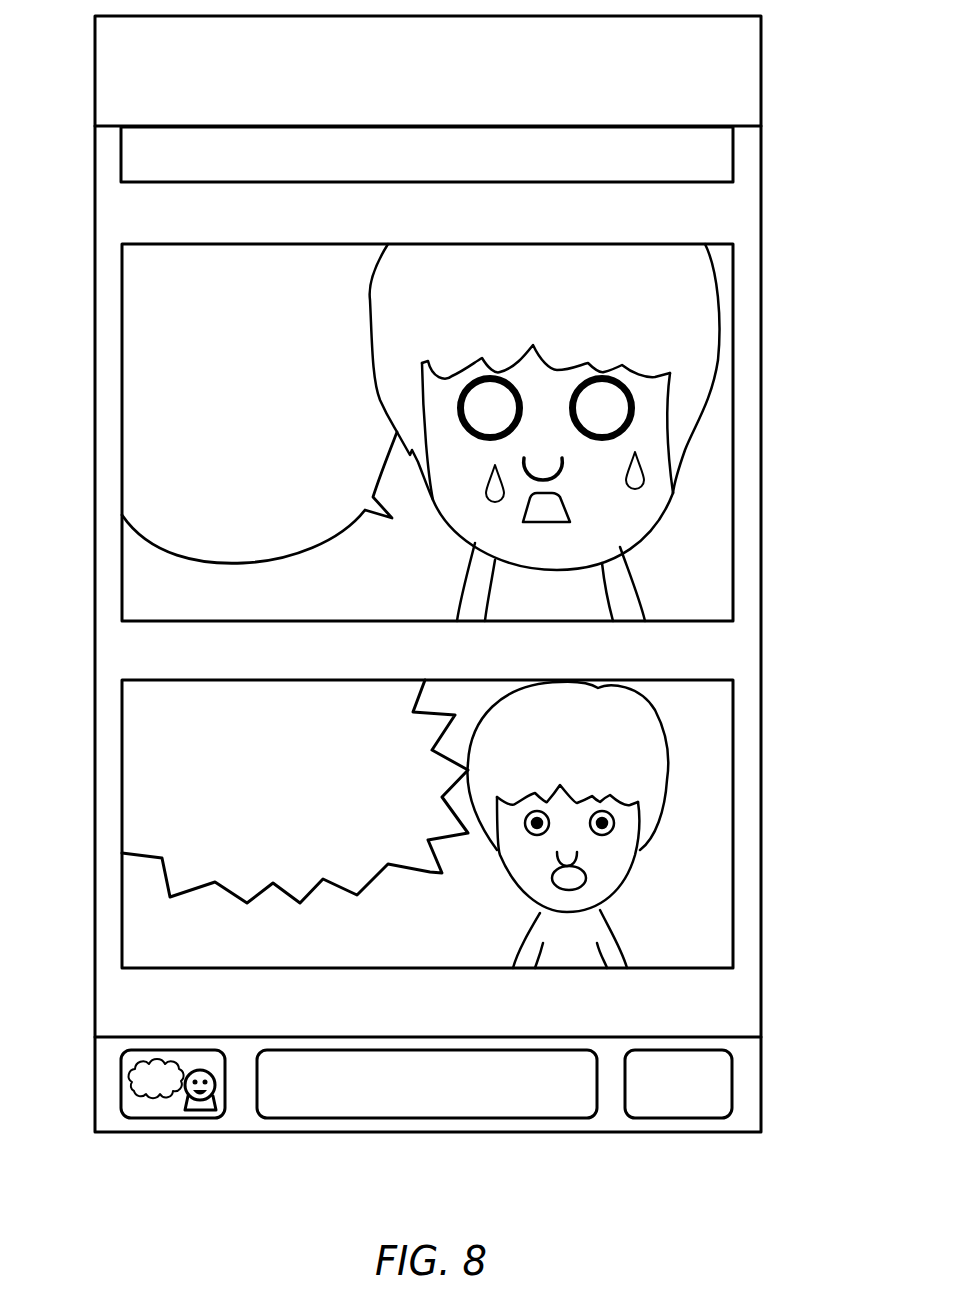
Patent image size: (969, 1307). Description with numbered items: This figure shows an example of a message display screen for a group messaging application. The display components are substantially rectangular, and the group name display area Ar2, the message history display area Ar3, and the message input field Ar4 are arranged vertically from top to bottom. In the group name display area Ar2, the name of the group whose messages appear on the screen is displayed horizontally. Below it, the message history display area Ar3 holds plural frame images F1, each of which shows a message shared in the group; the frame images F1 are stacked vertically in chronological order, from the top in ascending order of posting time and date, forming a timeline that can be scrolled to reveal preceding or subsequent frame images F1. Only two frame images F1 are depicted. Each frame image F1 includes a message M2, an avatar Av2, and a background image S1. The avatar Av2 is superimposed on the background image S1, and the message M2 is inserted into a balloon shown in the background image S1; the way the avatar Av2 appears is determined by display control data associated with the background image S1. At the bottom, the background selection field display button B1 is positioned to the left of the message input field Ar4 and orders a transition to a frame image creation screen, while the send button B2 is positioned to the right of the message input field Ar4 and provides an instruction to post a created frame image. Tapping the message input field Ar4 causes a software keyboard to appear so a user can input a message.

The group name display area Ar2 is at (740, 75).
The message history display area Ar3 is at (740, 215).
The message input field Ar4 is at (508, 1107).
The background selection field display button B1 is at (168, 1107).
The send button B2 is at (688, 1107).
The frame image F1 is at (735, 465).
The background image S1 is at (707, 530).
The message M2 is at (142, 428).
The avatar Av2 is at (473, 576).